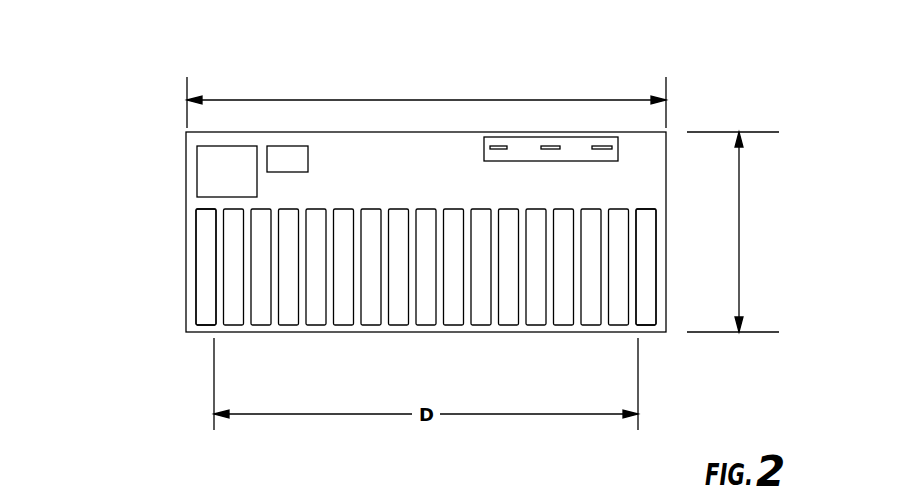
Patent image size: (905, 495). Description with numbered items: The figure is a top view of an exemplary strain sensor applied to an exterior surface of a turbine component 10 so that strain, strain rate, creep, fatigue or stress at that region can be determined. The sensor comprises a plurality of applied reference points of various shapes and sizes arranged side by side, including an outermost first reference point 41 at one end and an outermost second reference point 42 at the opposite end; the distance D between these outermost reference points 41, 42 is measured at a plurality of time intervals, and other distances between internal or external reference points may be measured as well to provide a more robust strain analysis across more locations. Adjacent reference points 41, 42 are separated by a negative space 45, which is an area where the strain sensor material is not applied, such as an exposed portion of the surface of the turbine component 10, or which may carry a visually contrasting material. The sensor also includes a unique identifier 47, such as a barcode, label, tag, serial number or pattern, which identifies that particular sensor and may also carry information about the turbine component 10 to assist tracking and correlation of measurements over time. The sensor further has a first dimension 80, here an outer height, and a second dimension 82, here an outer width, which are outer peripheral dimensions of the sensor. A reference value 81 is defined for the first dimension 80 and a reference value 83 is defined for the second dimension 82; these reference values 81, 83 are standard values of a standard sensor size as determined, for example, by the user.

The turbine component 10 is at (97, 125).
The first dimension 80 is at (320, 77).
The reference value 81 is at (410, 100).
The unique identifier 47 is at (560, 132).
The reference value 83 is at (739, 220).
The second dimension 82 is at (777, 245).
The negative space 45 is at (220, 233).
The first reference point 41 is at (206, 325).
The second reference point 42 is at (651, 327).